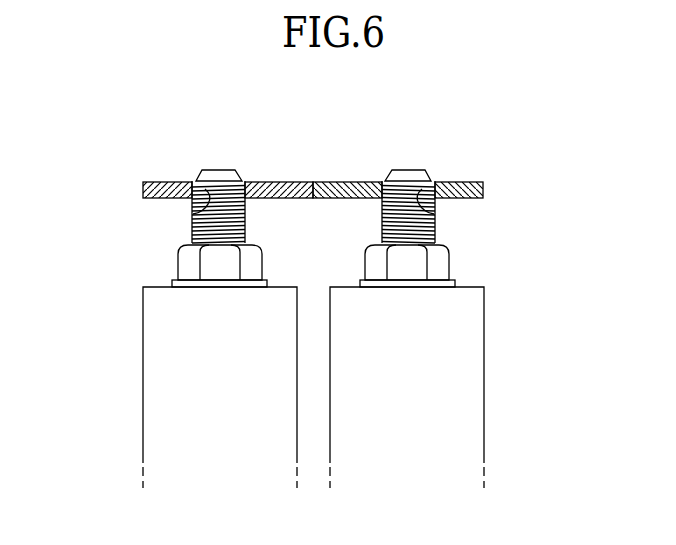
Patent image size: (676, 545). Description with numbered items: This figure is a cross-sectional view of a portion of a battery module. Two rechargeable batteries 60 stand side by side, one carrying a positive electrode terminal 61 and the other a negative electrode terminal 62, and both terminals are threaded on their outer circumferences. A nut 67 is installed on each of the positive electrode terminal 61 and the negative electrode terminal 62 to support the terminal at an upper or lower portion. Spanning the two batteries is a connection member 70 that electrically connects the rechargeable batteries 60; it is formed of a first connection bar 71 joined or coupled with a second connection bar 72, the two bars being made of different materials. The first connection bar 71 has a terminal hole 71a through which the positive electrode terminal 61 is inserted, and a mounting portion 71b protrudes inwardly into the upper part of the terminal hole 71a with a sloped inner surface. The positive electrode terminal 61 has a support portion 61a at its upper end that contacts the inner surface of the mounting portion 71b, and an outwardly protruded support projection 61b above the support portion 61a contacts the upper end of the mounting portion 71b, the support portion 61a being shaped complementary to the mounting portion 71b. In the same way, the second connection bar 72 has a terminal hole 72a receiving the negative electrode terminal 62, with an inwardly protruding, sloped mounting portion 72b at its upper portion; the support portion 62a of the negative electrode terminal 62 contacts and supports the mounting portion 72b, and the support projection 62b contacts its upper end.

The rechargeable battery 60 is at (131, 367).
The positive electrode terminal 61 is at (161, 187).
The support portion 61a is at (243, 182).
The support projection 61b is at (151, 188).
The negative electrode terminal 62 is at (466, 187).
The support portion 62a is at (383, 183).
The support projection 62b is at (476, 188).
The nut 67 is at (192, 262).
The connection member 70 is at (313, 136).
The first connection bar 71 is at (276, 183).
The terminal hole 71a is at (192, 222).
The mounting portion 71b is at (192, 230).
The second connection bar 72 is at (338, 183).
The terminal hole 72a is at (435, 222).
The mounting portion 72b is at (435, 230).